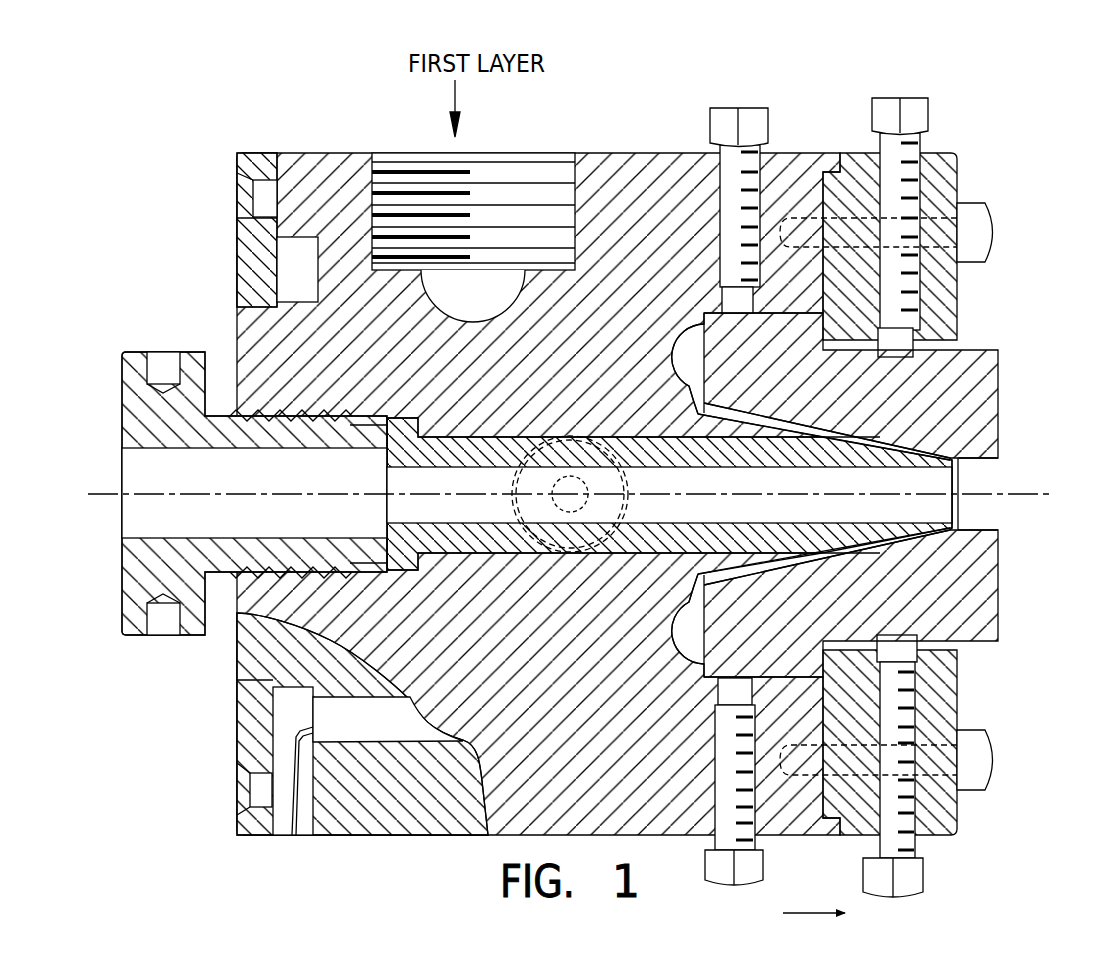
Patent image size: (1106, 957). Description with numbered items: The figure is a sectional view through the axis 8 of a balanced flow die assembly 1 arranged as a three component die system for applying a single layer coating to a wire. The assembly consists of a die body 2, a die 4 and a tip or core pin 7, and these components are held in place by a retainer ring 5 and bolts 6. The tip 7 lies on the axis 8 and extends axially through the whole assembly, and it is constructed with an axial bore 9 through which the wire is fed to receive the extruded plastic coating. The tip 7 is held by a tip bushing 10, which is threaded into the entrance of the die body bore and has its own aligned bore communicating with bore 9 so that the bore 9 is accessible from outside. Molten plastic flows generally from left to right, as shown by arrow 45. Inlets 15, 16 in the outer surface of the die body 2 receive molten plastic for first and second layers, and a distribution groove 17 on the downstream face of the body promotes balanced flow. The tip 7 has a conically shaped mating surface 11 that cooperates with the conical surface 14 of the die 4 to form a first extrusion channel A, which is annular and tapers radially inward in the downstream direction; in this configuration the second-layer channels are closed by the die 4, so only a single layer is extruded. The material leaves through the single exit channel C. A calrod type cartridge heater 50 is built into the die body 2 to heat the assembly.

The balanced flow die assembly 1 is at (982, 168).
The die body 2 is at (320, 153).
The die 4 is at (990, 375).
The retainer ring 5 is at (957, 340).
The bolts 6 is at (1000, 235).
The tip or core pin 7 is at (392, 458).
The axis 8 is at (1000, 497).
The axial bore 9 is at (463, 519).
The tip bushing 10 is at (188, 352).
The conically shaped mating surface 11 is at (928, 445).
The conical surface 14 is at (962, 468).
The inlet 15 is at (543, 180).
The inlet 16 is at (520, 483).
The distribution groove 17 is at (690, 352).
The arrow 45 is at (818, 907).
The calrod type cartridge heater 50 is at (313, 720).
The first extrusion channel A is at (920, 537).
The exit channel C is at (992, 510).